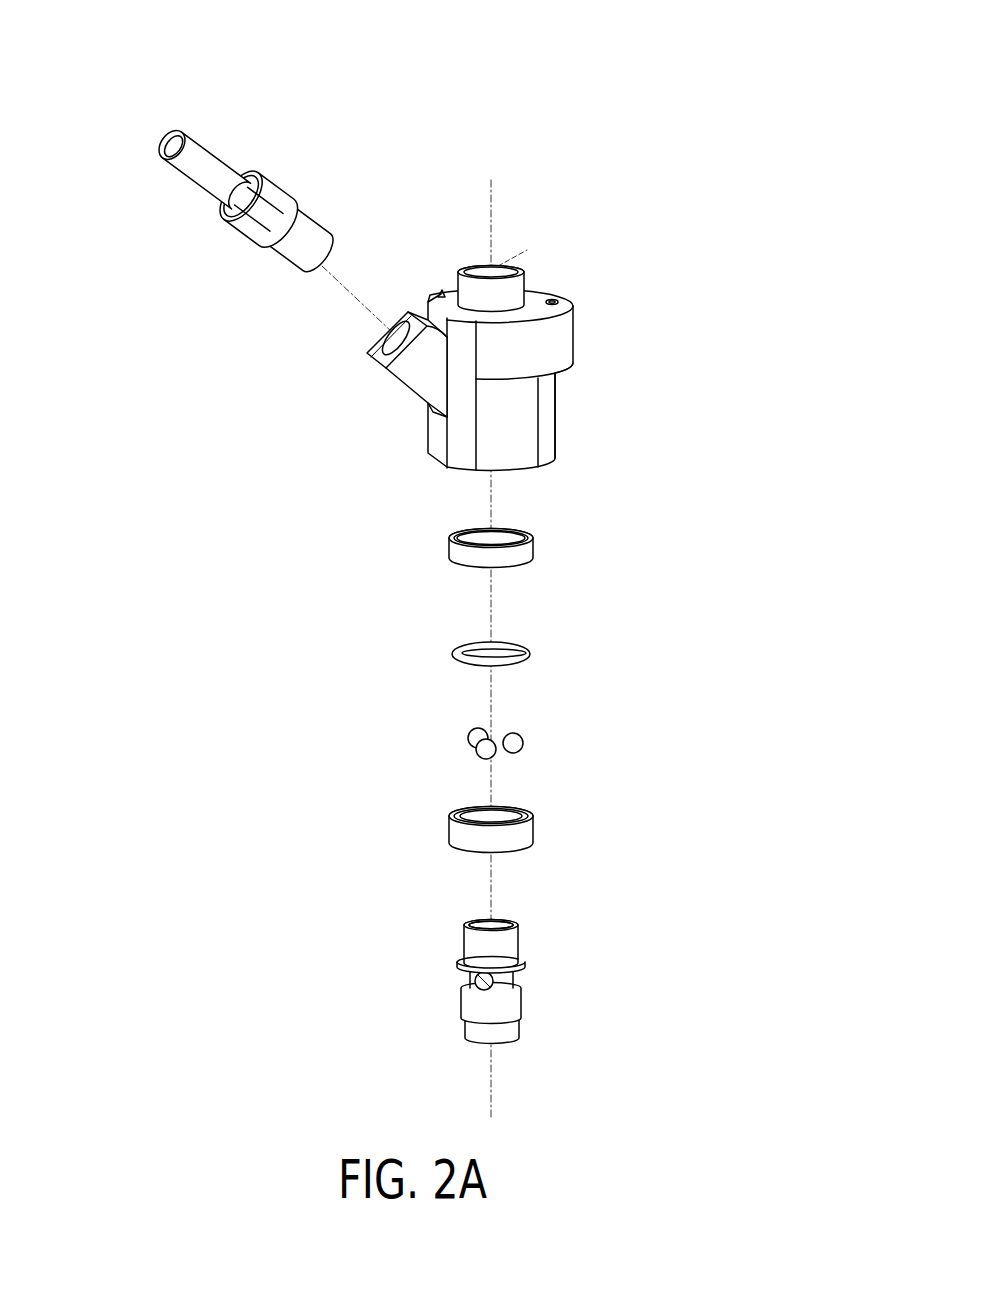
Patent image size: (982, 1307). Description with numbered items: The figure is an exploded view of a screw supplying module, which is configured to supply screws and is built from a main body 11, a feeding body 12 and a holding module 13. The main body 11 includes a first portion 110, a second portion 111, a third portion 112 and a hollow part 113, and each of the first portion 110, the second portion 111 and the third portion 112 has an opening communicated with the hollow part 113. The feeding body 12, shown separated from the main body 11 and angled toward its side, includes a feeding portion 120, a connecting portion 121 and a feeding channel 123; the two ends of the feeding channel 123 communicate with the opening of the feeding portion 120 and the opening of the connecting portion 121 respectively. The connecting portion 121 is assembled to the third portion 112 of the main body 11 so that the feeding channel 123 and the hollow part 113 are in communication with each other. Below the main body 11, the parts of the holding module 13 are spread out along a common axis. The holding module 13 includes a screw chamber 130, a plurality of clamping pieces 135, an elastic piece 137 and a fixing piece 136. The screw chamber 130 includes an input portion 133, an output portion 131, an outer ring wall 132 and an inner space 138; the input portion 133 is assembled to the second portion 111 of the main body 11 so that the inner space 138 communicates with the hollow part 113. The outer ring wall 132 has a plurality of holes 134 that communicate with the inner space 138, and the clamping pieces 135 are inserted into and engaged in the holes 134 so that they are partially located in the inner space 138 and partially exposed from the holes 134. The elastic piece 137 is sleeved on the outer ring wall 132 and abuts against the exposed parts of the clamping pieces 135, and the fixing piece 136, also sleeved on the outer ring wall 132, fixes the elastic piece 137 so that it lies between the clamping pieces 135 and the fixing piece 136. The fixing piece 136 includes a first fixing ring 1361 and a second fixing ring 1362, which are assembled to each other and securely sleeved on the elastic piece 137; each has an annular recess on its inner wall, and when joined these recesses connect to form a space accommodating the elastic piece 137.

The main body 11 is at (509, 341).
The first portion 110 is at (417, 360).
The second portion 111 is at (427, 458).
The third portion 112 is at (390, 372).
The hollow part 113 is at (500, 262).
The feeding body 12 is at (255, 166).
The feeding portion 120 is at (188, 123).
The connecting portion 121 is at (325, 240).
The feeding channel 123 is at (166, 140).
The holding module 13 is at (535, 794).
The screw chamber 130 is at (503, 959).
The output portion 131 is at (515, 1035).
The outer ring wall 132 is at (511, 980).
The input portion 133 is at (513, 942).
The holes 134 is at (476, 983).
The clamping pieces 135 is at (520, 737).
The fixing piece 136 is at (406, 691).
The first fixing ring 1361 is at (452, 550).
The second fixing ring 1362 is at (458, 830).
The elastic piece 137 is at (528, 648).
The inner space 138 is at (485, 924).